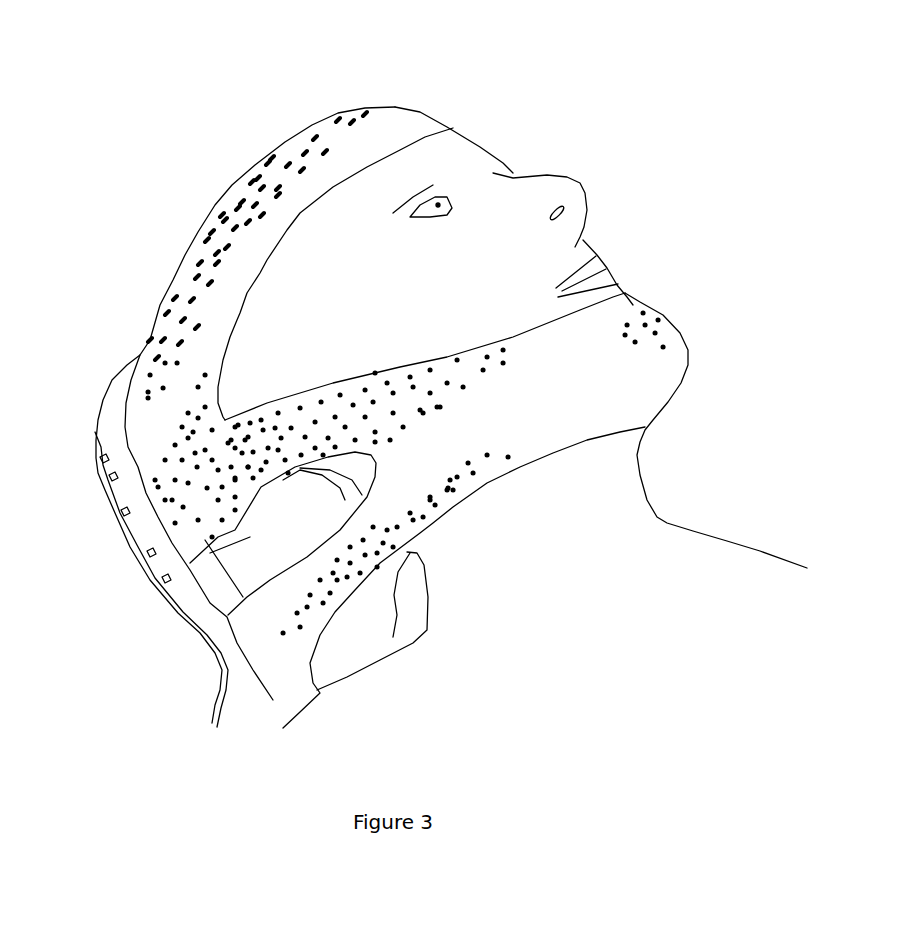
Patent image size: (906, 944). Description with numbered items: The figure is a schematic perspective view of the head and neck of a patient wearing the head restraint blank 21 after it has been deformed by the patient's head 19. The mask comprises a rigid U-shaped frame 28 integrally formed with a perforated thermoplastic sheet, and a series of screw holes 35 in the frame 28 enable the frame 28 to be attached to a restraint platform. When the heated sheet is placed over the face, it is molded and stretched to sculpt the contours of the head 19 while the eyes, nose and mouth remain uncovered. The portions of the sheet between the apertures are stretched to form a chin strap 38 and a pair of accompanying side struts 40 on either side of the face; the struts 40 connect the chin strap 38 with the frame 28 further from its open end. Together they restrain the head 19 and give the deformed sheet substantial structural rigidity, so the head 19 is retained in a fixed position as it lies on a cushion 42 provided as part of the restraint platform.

The head restraint blank 21 is at (385, 98).
The patient's head 19 is at (503, 163).
The side struts 40 is at (275, 428).
The chin strap 38 is at (580, 412).
The U-shaped frame 28 is at (100, 480).
The screw holes 35 is at (95, 432).
The cushion 42 is at (192, 601).